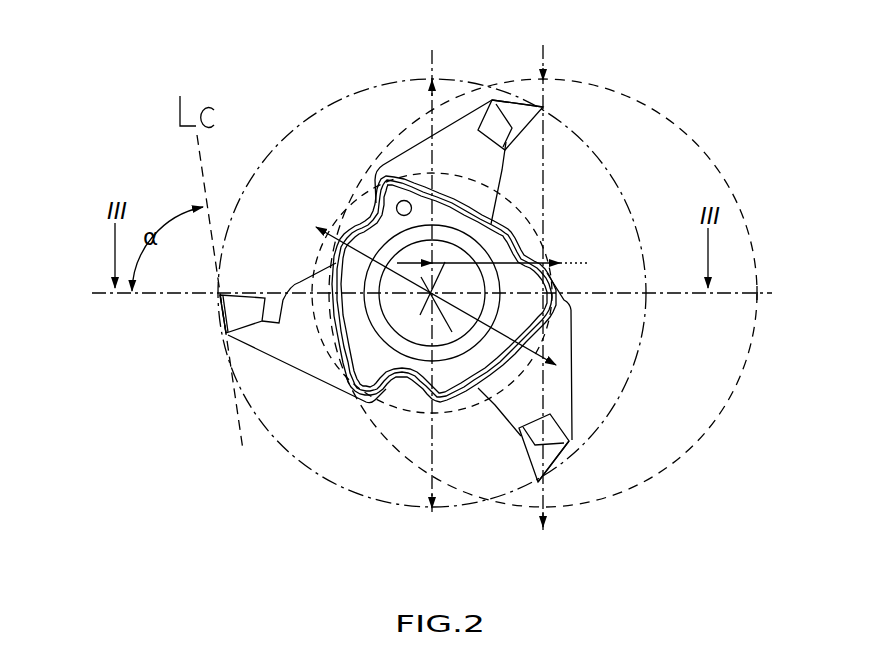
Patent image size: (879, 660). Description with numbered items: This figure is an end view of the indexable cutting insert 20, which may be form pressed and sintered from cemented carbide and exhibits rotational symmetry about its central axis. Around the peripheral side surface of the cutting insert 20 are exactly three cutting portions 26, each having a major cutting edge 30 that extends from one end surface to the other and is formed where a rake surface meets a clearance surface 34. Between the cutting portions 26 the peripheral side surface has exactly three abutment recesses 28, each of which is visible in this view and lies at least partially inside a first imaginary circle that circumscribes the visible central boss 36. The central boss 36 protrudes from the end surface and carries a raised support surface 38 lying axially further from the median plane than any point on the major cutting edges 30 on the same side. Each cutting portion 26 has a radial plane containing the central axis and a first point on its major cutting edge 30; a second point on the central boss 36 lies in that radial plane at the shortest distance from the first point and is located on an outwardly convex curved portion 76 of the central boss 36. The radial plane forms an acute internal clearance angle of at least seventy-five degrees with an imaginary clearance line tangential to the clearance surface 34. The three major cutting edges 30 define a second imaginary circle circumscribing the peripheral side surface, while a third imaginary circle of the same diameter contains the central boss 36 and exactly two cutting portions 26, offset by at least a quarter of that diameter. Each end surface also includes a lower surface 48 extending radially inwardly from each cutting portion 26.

The cutting insert 20 is at (388, 125).
The cutting portion 26 is at (510, 100).
The abutment recess 28 is at (360, 205).
The major cutting edge 30 is at (220, 296).
The clearance surface 34 is at (222, 327).
The central boss 36 is at (360, 388).
The raised support surface 38 is at (332, 352).
The lower surface 48 is at (277, 347).
The curved portion 76 is at (330, 297).